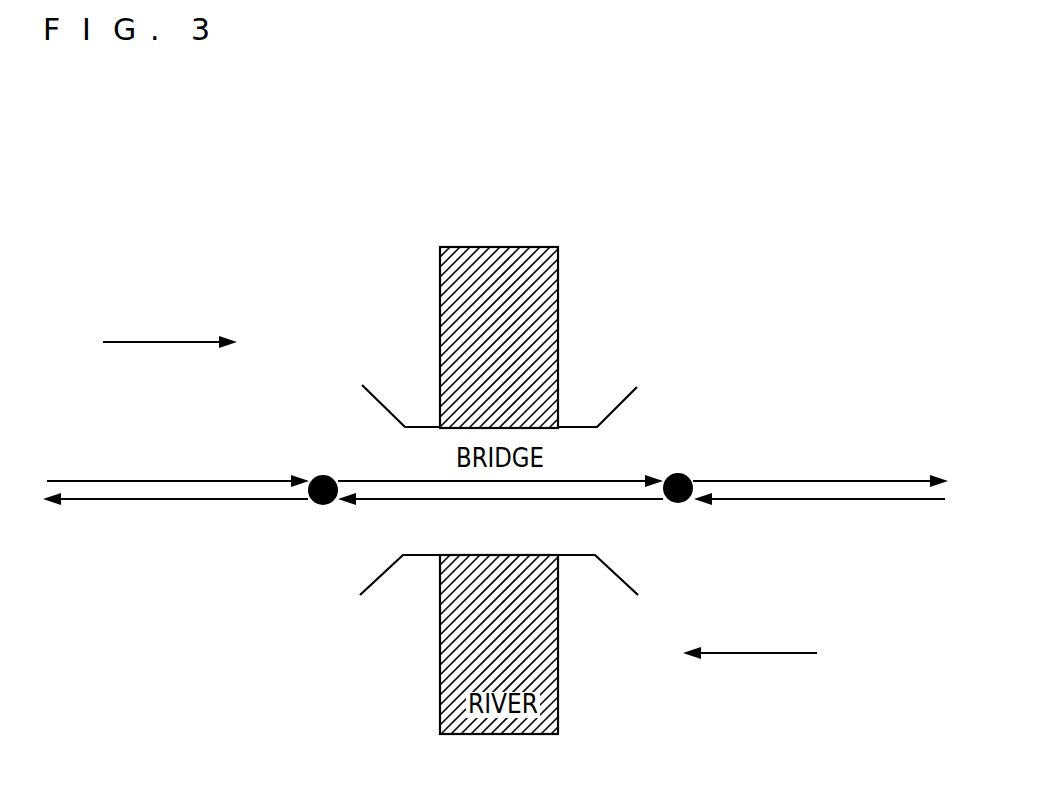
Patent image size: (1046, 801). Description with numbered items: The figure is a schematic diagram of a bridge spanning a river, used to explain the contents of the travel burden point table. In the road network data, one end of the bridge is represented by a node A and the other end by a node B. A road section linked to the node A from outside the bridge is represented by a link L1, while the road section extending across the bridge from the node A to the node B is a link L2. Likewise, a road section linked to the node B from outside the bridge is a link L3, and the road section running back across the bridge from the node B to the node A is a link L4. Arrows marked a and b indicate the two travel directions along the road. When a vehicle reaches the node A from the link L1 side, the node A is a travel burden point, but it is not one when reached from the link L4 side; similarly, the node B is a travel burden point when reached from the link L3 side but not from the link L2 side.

The link L1 is at (183, 480).
The link L2 is at (600, 480).
The link L3 is at (828, 500).
The link L4 is at (383, 500).
The node A is at (323, 468).
The node B is at (678, 466).
The travel direction a is at (170, 323).
The travel direction b is at (750, 636).